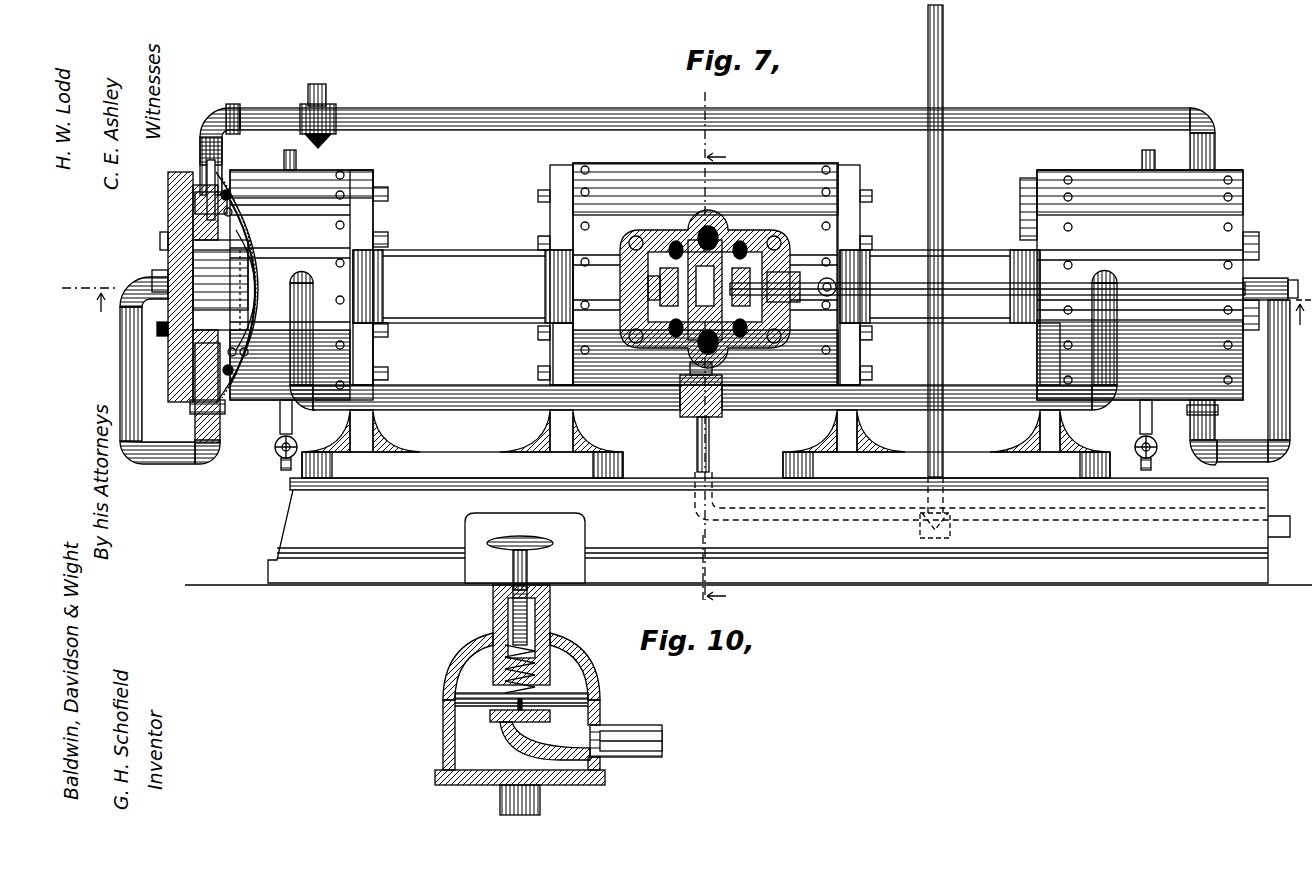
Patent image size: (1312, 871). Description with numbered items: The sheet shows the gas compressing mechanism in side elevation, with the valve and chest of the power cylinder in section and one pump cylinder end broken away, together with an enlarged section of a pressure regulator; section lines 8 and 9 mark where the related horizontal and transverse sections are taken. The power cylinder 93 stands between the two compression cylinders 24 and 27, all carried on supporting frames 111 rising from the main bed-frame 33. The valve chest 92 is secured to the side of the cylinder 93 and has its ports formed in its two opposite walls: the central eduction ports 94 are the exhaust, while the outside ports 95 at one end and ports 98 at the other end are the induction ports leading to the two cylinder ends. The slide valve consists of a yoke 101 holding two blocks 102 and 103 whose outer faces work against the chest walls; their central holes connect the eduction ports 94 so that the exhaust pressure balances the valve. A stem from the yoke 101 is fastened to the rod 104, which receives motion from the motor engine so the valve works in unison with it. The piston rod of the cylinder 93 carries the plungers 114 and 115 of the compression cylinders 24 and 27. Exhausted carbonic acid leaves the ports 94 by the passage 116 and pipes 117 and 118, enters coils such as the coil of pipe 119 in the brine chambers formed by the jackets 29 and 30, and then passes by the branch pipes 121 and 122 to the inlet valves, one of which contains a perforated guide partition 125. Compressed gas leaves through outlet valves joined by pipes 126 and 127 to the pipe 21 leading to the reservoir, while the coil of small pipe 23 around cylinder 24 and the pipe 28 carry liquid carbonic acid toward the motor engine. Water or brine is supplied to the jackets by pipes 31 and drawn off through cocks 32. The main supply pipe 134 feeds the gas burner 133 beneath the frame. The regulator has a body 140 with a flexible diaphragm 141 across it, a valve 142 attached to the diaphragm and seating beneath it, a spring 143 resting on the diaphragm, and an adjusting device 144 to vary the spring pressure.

In FIG. 7, the section line 8 8 is at (681, 301).
In FIG. 7, the section line 9 9 is at (713, 348).
In FIG. 7, the pipe 21 is at (325, 100).
In FIG. 7, the coil of small pipe 23 is at (258, 220).
In FIG. 7, the compression cylinder 24 is at (166, 222).
In FIG. 7, the compression cylinder 27 is at (1244, 226).
In FIG. 7, the pipe 28 is at (1285, 275).
In FIG. 7, the jacket or casing 29 is at (278, 445).
In FIG. 7, the jacket or casing 30 is at (1232, 170).
In FIG. 7, the pipe 31 is at (297, 165).
In FIG. 7, the cock 32 is at (282, 466).
In FIG. 7, the main bed-frame 33 is at (300, 518).
In FIG. 7, the valve chest 92 is at (760, 226).
In FIG. 7, the power cylinder 93 is at (646, 165).
In FIG. 7, the eduction or exhaust port 94 is at (706, 224).
In FIG. 7, the induction port 95 is at (732, 236).
In FIG. 7, the induction port 98 is at (672, 232).
In FIG. 7, the valve yoke 101 is at (648, 282).
In FIG. 7, the valve block 102 is at (630, 258).
In FIG. 7, the valve block 103 is at (640, 306).
In FIG. 7, the rod 104 is at (972, 294).
In FIG. 7, the supporting frame 111 is at (965, 242).
In FIG. 7, the plunger 114 is at (258, 272).
In FIG. 7, the plunger 115 is at (915, 328).
In FIG. 7, the passage 116 is at (715, 417).
In FIG. 7, the pipe 117 is at (446, 398).
In FIG. 7, the pipe 118 is at (1000, 406).
In FIG. 7, the coil of pipe 119 is at (228, 178).
In FIG. 7, the branch pipe 121 is at (120, 348).
In FIG. 7, the branch pipe 122 is at (1228, 448).
In FIG. 7, the perforated guide partition 125 is at (205, 412).
In FIG. 7, the pipe 126 is at (286, 112).
In FIG. 7, the pipe 127 is at (552, 112).
In FIG. 7, the gas burner 133 is at (709, 455).
In FIG. 7, the main supply pipe 134 is at (943, 75).
In FIG. 10, the pressure reducing device 140 is at (525, 724).
In FIG. 10, the flexible diaphragm 141 is at (470, 704).
In FIG. 10, the valve 142 is at (530, 728).
In FIG. 10, the spring 143 is at (500, 694).
In FIG. 10, the adjusting device 144 is at (493, 606).